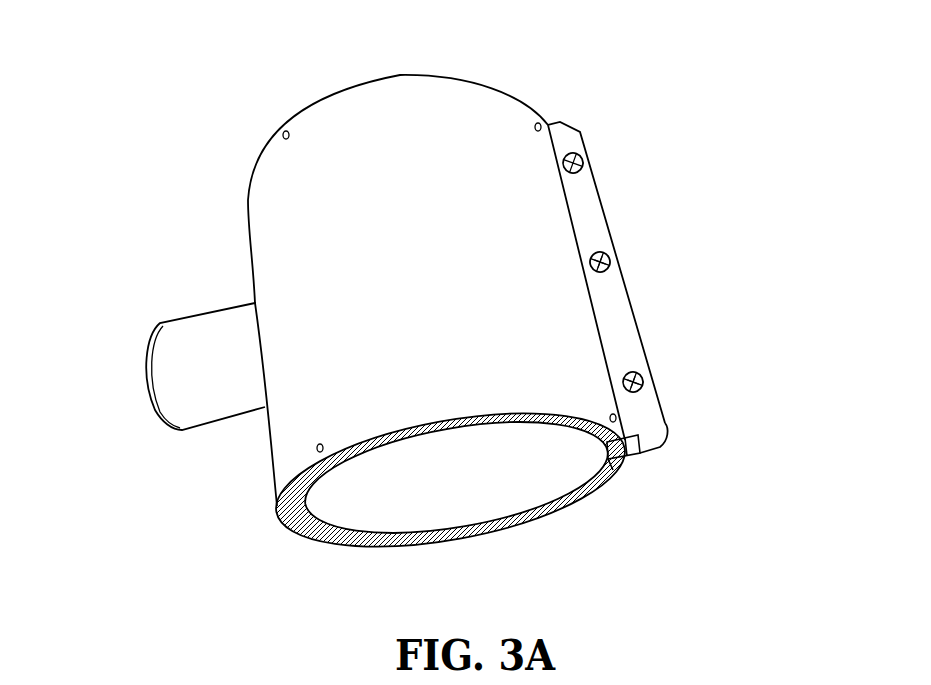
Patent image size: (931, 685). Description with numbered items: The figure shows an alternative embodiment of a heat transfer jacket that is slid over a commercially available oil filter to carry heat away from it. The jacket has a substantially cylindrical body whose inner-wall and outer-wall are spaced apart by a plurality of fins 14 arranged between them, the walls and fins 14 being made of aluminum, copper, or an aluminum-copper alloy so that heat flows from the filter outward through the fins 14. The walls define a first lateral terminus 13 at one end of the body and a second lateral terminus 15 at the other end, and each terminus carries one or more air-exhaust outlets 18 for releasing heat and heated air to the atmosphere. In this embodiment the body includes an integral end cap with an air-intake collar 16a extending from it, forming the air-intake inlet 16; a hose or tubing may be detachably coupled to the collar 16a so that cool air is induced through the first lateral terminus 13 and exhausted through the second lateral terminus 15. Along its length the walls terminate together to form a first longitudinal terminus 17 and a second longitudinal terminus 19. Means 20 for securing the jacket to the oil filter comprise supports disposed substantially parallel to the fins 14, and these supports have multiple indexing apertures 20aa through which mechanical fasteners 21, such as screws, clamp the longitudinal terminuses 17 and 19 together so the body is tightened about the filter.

The first lateral terminus 13 is at (383, 74).
The fins 14 is at (280, 528).
The second lateral terminus 15 is at (343, 548).
The air-intake inlet 16 is at (166, 335).
The air-intake collar 16a is at (147, 262).
The first longitudinal terminus 17 is at (623, 273).
The air-exhaust outlets 18 is at (625, 468).
The second longitudinal terminus 19 is at (667, 443).
The means for securing the jacket 20 is at (583, 164).
The mechanical fasteners 21 is at (616, 322).
The indexing apertures 20aa is at (641, 375).